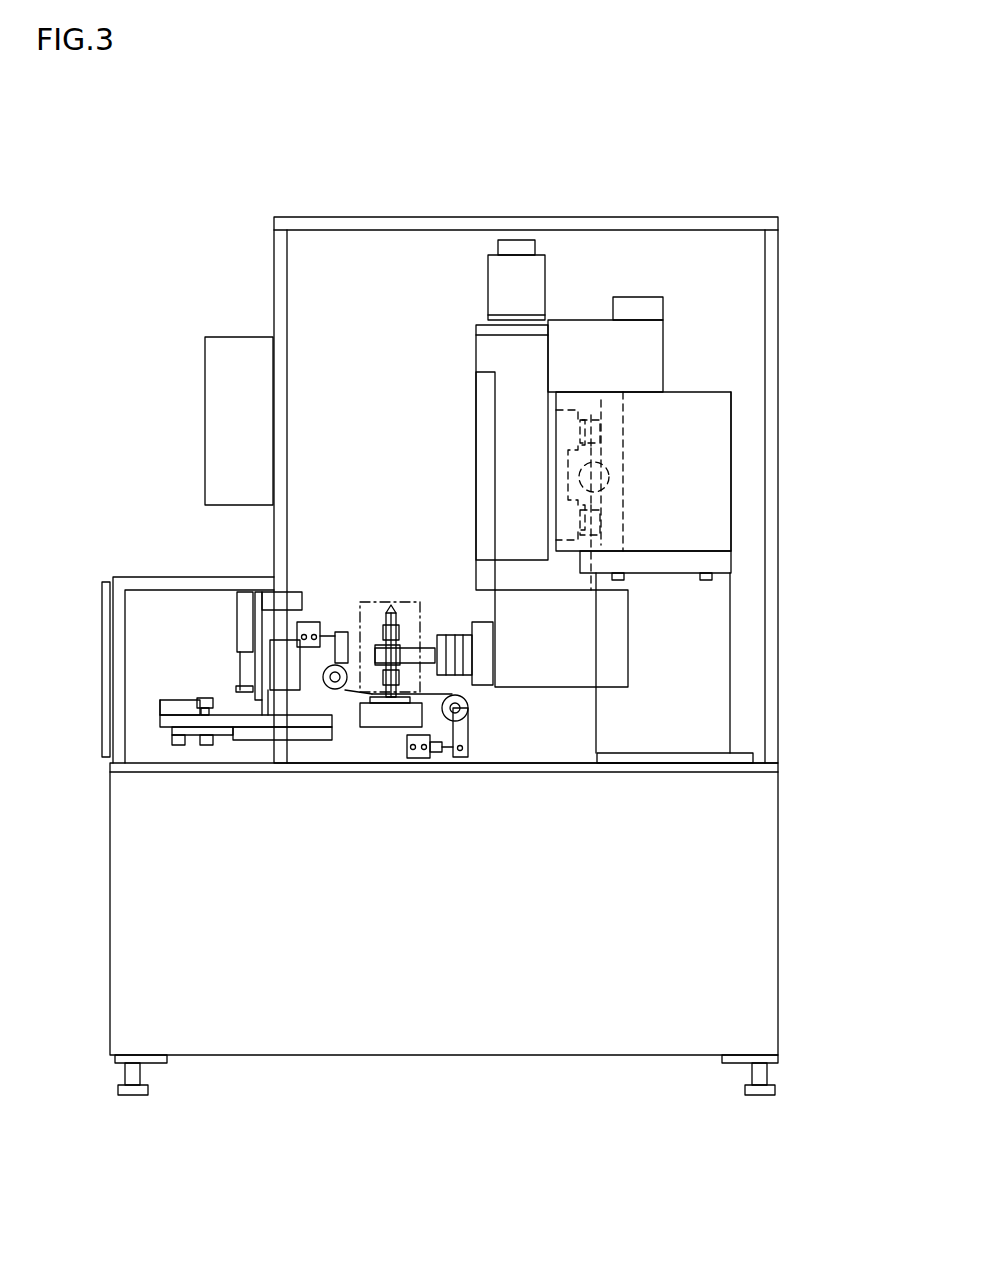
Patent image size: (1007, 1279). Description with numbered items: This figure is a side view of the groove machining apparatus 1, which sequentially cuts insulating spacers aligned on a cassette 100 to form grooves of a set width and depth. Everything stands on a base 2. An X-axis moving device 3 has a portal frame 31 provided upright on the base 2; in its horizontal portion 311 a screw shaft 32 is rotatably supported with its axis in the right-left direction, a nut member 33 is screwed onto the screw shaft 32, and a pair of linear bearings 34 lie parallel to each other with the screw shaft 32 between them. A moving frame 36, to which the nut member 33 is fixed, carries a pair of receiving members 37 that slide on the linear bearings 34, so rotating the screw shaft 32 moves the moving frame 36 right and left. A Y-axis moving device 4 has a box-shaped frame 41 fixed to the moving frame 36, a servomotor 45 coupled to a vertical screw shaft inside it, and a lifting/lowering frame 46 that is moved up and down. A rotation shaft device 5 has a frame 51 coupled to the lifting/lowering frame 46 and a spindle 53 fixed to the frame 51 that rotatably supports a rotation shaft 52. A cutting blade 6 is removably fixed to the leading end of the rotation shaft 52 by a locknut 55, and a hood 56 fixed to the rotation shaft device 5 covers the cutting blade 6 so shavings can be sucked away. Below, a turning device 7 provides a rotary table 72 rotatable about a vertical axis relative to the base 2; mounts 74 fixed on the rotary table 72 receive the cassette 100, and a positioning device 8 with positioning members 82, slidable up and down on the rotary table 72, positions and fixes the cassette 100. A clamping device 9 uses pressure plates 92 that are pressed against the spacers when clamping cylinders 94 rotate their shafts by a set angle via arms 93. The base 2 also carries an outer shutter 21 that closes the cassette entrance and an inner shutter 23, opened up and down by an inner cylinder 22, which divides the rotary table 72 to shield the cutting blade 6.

The groove machining apparatus 1 is at (133, 158).
The base 2 is at (108, 848).
The X-axis moving device 3 is at (748, 433).
The Y-axis moving device 4 is at (476, 340).
The rotation shaft device 5 is at (526, 700).
The cutting blade 6 is at (385, 604).
The turning device 7 is at (220, 750).
The positioning device 8 is at (165, 745).
The clamping device 9 is at (320, 692).
The outer shutter 21 is at (104, 705).
The inner cylinder 22 is at (240, 618).
The inner shutter 23 is at (263, 718).
The portal frame 31 is at (735, 478).
The screw shaft 32 is at (606, 485).
The nut member 33 is at (620, 420).
The linear bearings 34 is at (605, 428).
The moving frame 36 is at (576, 420).
The receiving members 37 is at (592, 425).
The box-shaped frame 41 is at (487, 356).
The servomotor 45 is at (488, 262).
The lifting/lowering frame 46 is at (488, 430).
The frame 51 is at (612, 662).
The rotation shaft 52 is at (410, 650).
The spindle 53 is at (460, 630).
The locknut 55 is at (388, 630).
The hood 56 is at (390, 612).
The rotary table 72 is at (206, 697).
The mount 74 is at (160, 718).
The positioning members 82 is at (166, 697).
The pressure plates 92 is at (335, 706).
The arms 93 is at (462, 752).
The clamping cylinders 94 is at (300, 624).
The cassette 100 is at (162, 700).
The horizontal portion 311 is at (716, 415).